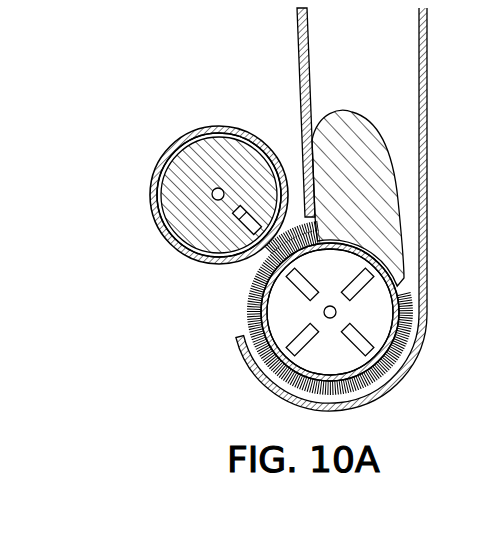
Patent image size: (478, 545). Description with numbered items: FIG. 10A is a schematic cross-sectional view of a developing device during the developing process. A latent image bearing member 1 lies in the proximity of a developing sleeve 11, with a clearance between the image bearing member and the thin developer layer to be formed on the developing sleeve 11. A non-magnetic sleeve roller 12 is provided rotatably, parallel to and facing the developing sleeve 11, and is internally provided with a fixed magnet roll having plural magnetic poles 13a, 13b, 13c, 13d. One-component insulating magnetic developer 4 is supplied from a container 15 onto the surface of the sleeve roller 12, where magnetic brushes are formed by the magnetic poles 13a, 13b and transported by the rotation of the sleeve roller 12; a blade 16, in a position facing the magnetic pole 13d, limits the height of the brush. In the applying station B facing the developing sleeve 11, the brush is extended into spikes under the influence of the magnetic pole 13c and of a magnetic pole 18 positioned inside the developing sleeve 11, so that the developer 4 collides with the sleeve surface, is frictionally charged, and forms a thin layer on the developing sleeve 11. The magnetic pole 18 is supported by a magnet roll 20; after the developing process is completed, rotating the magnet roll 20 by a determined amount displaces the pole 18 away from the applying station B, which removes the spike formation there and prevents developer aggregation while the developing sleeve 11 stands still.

The latent image bearing member 1 is at (113, 164).
The one-component insulating magnetic developer 4 is at (352, 132).
The developing sleeve 11 is at (213, 185).
The sleeve roller 12 is at (358, 307).
The magnetic pole 13a is at (358, 342).
The magnetic pole 13b is at (358, 286).
The magnetic pole 13c is at (302, 277).
The magnetic pole 13d is at (302, 338).
The container 15 is at (427, 77).
The blade 16 is at (298, 173).
The magnetic pole 18 is at (257, 204).
The magnet roll 20 is at (183, 238).
The applying station B is at (252, 264).